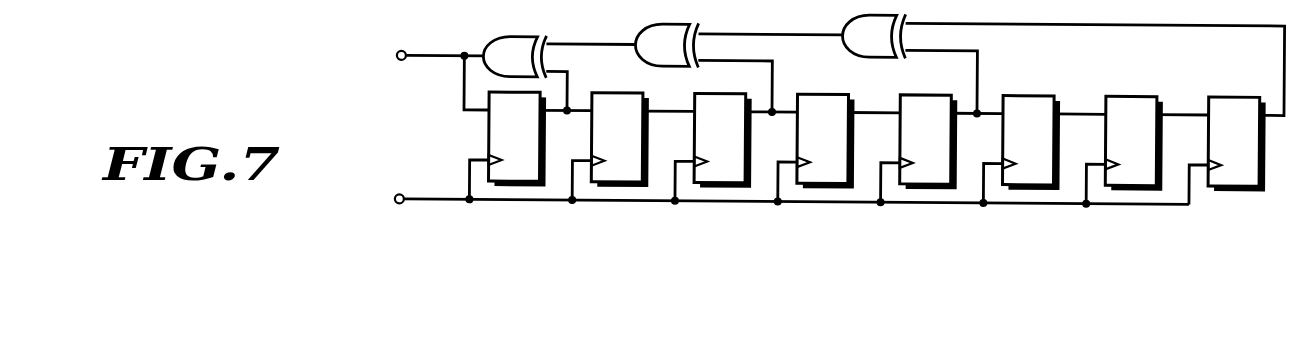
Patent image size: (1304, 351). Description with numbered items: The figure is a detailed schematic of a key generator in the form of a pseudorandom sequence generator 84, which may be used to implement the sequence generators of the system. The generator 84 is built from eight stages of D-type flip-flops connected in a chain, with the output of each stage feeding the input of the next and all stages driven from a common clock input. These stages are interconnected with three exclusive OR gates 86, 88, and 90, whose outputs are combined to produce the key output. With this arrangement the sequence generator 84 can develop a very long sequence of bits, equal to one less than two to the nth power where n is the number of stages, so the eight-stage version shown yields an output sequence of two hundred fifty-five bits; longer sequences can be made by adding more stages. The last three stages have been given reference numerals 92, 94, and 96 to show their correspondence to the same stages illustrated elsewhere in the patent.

The pseudorandom sequence generator 84 is at (393, 133).
The exclusive OR gate 86 is at (882, 54).
The exclusive OR gate 88 is at (675, 65).
The exclusive OR gate 90 is at (522, 36).
The stage of sequence generator 92 is at (1030, 92).
The stage of sequence generator 94 is at (1133, 92).
The stage of sequence generator 96 is at (1236, 92).